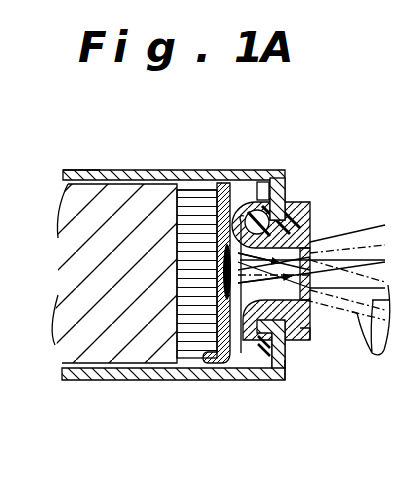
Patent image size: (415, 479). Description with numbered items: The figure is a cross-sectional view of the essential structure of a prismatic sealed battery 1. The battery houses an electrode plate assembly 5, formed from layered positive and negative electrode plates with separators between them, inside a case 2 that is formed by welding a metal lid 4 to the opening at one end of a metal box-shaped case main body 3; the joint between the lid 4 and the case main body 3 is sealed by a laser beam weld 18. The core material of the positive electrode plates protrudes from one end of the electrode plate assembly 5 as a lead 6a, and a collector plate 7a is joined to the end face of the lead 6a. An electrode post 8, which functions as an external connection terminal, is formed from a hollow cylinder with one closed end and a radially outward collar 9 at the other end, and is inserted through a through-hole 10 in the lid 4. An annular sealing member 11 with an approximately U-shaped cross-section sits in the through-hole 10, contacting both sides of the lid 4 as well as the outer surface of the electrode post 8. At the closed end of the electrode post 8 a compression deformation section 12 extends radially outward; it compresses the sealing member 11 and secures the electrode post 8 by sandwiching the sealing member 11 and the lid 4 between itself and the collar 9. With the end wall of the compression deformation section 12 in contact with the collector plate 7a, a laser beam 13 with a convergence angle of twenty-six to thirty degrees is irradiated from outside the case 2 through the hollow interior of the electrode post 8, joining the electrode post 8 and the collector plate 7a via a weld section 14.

The prismatic sealed battery 1 is at (180, 150).
The case 2 is at (84, 167).
The case main body 3 is at (86, 378).
The lid 4 is at (297, 374).
The electrode plate assembly 5 is at (103, 288).
The lead 6a is at (172, 295).
The collector plate 7a is at (238, 220).
The electrode post 8 is at (314, 333).
The collar 9 is at (306, 212).
The through-hole 10 is at (292, 199).
The sealing member 11 is at (262, 192).
The compression deformation section 12 is at (240, 356).
The laser beam 13 is at (380, 362).
The weld section 14 is at (220, 292).
The laser beam weld 18 is at (284, 192).